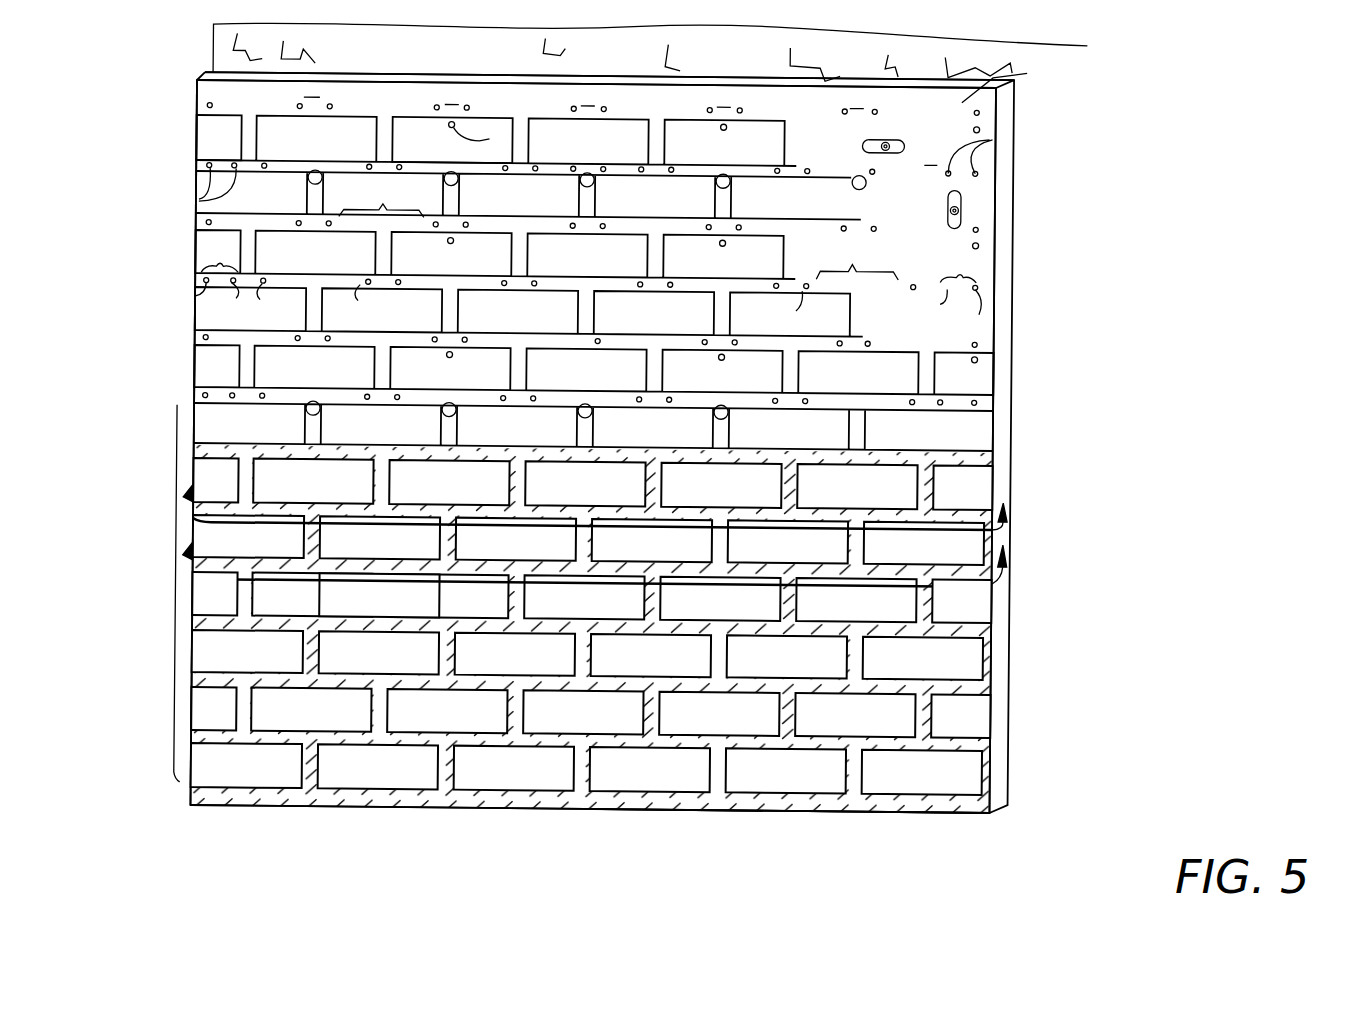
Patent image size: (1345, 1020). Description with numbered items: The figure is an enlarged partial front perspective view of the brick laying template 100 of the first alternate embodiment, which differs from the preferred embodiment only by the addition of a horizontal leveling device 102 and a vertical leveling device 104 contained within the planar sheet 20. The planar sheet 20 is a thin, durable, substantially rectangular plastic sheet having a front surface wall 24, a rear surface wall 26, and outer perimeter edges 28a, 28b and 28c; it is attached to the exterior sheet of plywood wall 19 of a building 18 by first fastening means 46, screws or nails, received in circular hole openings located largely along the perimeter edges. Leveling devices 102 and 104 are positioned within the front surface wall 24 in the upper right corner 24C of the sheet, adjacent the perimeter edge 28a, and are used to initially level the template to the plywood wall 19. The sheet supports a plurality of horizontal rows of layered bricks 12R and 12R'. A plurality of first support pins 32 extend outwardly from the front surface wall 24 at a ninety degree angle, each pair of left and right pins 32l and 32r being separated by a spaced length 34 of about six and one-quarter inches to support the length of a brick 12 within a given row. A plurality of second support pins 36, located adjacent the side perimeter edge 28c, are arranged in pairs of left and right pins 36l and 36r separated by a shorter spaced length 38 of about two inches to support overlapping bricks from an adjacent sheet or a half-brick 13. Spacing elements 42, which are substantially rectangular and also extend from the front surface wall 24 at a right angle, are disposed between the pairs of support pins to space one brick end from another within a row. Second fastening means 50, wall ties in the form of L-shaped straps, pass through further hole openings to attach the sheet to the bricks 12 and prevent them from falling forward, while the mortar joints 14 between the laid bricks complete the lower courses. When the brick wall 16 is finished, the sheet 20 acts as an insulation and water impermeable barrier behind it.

The brick 12 is at (406, 138).
The row of layered bricks 12R is at (600, 530).
The row of layered bricks 12R' is at (599, 580).
The half-brick 13 is at (218, 143).
The mortar joint 14 is at (461, 680).
The brick wall 16 is at (176, 437).
The building 18 is at (213, 48).
The exterior sheet of plywood wall 19 is at (258, 28).
The planar sheet 20 is at (855, 66).
The front surface wall 24 is at (656, 100).
The upper right corner 24C is at (1025, 81).
The rear surface wall 26 is at (376, 805).
The outer perimeter edge 28a is at (575, 62).
The outer perimeter edge 28b is at (735, 807).
The side perimeter edge 28c is at (191, 651).
The first support pin 32 is at (522, 272).
The left first support pin 32l is at (581, 307).
The right first support pin 32r is at (915, 280).
The spaced length 34 is at (618, 228).
The second support pin 36 is at (990, 132).
The left second support pin 36l is at (197, 296).
The right second support pin 36r is at (595, 310).
The spaced length 38 is at (590, 258).
The spacing element 42 is at (320, 95).
The first fastening means 46 is at (452, 345).
The second fastening means 50 is at (942, 163).
The brick laying template 100 is at (1105, 115).
The horizontal leveling device 102 is at (862, 140).
The vertical leveling device 104 is at (948, 206).